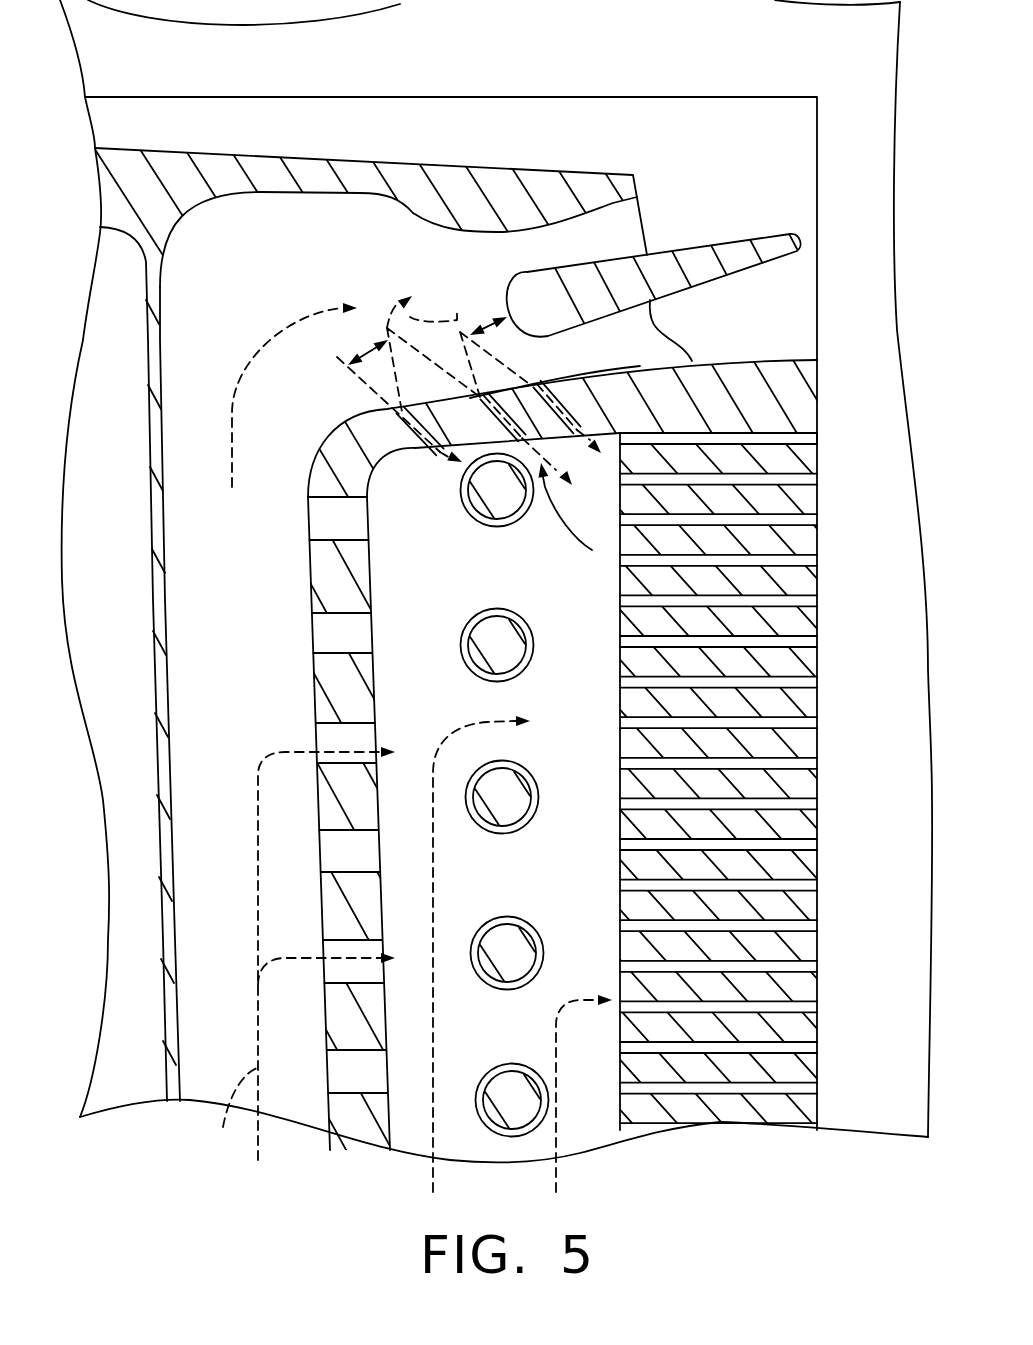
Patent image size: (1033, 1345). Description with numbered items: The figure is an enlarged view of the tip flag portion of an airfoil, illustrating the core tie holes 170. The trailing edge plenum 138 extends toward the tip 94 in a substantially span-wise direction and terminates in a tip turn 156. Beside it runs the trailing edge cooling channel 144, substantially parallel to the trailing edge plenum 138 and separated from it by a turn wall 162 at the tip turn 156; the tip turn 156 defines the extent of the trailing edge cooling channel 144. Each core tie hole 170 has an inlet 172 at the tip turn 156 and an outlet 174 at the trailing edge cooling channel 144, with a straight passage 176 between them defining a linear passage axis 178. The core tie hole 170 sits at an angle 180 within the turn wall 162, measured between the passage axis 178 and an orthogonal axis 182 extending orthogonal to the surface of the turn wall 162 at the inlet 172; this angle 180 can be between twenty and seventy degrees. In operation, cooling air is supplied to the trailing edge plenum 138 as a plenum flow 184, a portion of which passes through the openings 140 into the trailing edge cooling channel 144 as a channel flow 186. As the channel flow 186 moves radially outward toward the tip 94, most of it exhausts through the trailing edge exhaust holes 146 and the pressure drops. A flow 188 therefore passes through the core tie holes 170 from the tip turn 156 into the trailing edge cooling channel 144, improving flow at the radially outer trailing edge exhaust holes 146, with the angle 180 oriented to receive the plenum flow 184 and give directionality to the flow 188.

The tip 94 is at (165, 97).
The trailing edge plenum 138 is at (235, 783).
The openings 140 is at (333, 653).
The trailing edge cooling channel 144 is at (607, 880).
The trailing edge exhaust holes 146 is at (817, 768).
The tip turn 156 is at (377, 248).
The turn wall 162 is at (575, 380).
The core tie holes 170 is at (585, 411).
The inlet 172 is at (533, 383).
The outlet 174 is at (600, 436).
The passage 176 is at (568, 518).
The passage axis 178 is at (460, 308).
The angle 180 is at (353, 345).
The orthogonal axis 182 is at (562, 247).
The plenum flow 184 is at (263, 342).
The channel flow 186 is at (432, 1190).
The flow 188 is at (483, 510).